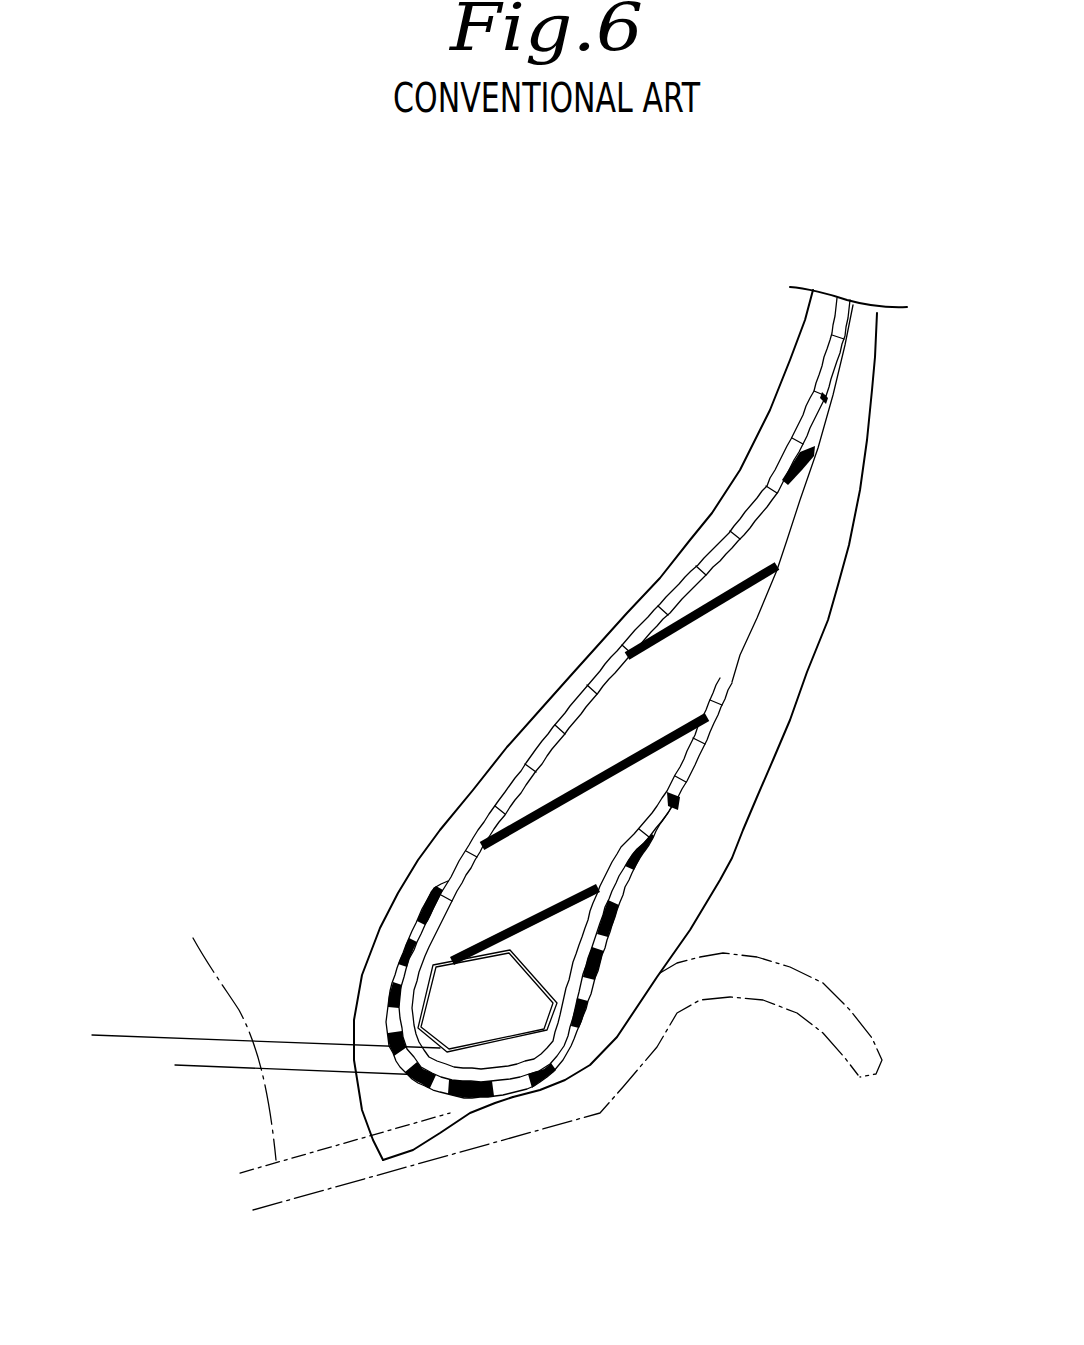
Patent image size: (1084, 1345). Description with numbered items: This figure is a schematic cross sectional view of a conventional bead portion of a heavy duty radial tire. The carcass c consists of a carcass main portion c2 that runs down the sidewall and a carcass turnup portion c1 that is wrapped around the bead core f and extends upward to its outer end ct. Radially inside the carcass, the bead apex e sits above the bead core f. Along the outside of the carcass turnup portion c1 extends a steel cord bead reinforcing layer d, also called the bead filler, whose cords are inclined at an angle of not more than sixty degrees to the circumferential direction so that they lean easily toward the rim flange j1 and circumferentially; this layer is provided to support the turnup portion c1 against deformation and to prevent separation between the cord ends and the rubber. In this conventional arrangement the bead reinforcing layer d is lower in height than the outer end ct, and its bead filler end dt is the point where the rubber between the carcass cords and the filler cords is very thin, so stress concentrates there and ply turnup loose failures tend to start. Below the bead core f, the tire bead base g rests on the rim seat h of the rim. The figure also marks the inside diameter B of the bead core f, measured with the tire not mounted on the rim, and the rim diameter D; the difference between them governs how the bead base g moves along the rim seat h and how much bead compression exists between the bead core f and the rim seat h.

The carcass c is at (626, 690).
The carcass turnup portion c1 is at (707, 720).
The carcass main portion c2 is at (577, 707).
The outer end of the turnup portion ct is at (733, 681).
The bead reinforcing layer d is at (627, 893).
The bead filler end dt is at (680, 795).
The bead apex e is at (553, 767).
The bead core f is at (473, 983).
The tire bead base g is at (513, 1100).
The rim seat h is at (229, 1027).
The rim flange j1 is at (697, 1007).
The inside diameter of the bead core B is at (105, 1052).
The rim diameter D is at (193, 1082).